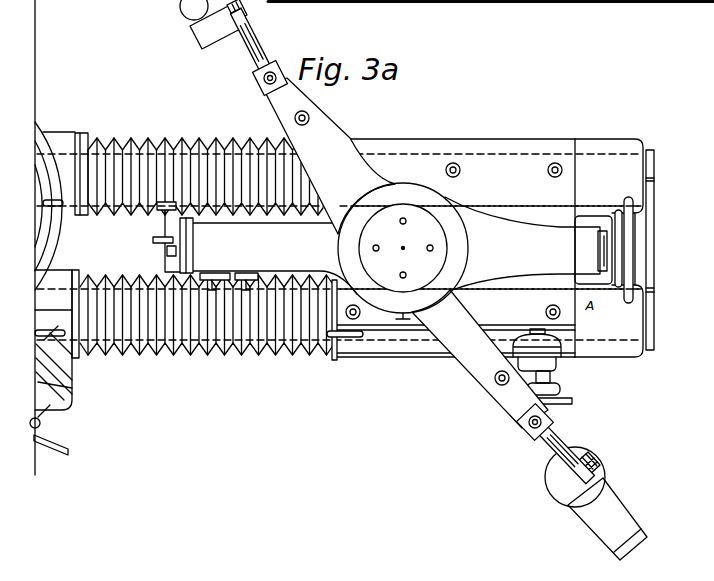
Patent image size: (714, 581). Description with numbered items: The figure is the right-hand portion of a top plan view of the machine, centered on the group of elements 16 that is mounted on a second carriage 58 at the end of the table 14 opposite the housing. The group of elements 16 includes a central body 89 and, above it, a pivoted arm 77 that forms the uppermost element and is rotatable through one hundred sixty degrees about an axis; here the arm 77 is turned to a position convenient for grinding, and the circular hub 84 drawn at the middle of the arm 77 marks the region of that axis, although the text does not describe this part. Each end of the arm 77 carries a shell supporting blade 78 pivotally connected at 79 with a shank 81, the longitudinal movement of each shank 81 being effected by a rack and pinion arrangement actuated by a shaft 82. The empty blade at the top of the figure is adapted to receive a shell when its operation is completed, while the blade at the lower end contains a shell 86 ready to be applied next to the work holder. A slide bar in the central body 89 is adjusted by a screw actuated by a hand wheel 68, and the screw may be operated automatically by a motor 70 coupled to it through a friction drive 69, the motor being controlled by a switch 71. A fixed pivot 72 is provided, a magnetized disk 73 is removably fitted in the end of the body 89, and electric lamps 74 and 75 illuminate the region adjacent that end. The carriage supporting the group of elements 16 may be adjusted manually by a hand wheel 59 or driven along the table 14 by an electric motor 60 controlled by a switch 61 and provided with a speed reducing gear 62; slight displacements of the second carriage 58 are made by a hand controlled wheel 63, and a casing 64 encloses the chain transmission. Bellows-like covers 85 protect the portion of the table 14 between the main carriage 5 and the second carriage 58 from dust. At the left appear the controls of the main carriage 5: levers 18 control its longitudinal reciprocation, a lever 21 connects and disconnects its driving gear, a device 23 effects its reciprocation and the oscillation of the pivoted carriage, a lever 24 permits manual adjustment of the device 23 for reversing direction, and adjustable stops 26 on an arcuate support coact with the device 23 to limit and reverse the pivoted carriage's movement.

The main carriage 5 is at (61, 237).
The table 14 is at (655, 162).
The group of elements 16 is at (598, 163).
The levers 18 is at (62, 454).
The lever 21 is at (47, 418).
The device 23 is at (73, 405).
The lever 24 is at (50, 332).
The adjustable stops 26 is at (62, 214).
The second carriage 58 is at (609, 248).
The hand wheel 59 is at (573, 402).
The electric motor 60 is at (556, 362).
The switch 61 is at (246, 273).
The speed reducing gear 62 is at (562, 390).
The hand controlled wheel 63 is at (336, 360).
The casing for the chain transmission 64 is at (366, 338).
The hand wheel 68 is at (628, 302).
The friction drive 69 is at (618, 210).
The motor 70 is at (599, 264).
The switch 71 is at (211, 273).
The fixed pivot 72 is at (193, 250).
The magnetized disk 73 is at (162, 254).
The electric lamp 74 is at (160, 209).
The electric lamp 75 is at (153, 241).
The pivoted arm 77 is at (328, 156).
The shell supporting blade 78 is at (648, 510).
The pivotal connection 79 is at (212, 30).
The shank 81 is at (258, 53).
The shaft 82 is at (523, 432).
The hub 84 is at (489, 251).
The bellows-like covers 85 is at (151, 140).
The shell 86 is at (413, 280).
The central body 89 is at (275, 258).